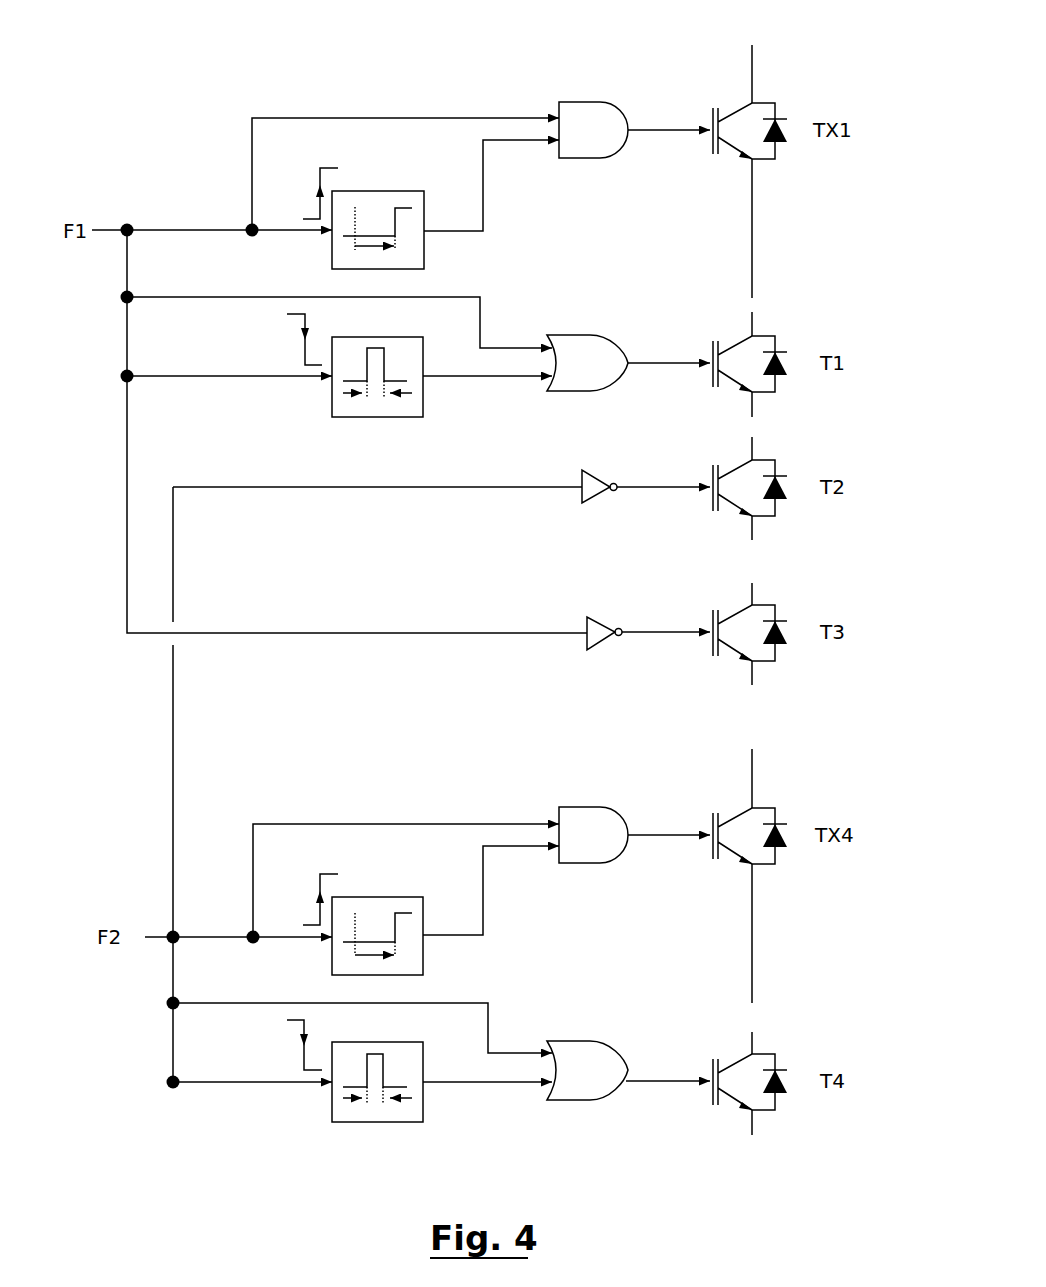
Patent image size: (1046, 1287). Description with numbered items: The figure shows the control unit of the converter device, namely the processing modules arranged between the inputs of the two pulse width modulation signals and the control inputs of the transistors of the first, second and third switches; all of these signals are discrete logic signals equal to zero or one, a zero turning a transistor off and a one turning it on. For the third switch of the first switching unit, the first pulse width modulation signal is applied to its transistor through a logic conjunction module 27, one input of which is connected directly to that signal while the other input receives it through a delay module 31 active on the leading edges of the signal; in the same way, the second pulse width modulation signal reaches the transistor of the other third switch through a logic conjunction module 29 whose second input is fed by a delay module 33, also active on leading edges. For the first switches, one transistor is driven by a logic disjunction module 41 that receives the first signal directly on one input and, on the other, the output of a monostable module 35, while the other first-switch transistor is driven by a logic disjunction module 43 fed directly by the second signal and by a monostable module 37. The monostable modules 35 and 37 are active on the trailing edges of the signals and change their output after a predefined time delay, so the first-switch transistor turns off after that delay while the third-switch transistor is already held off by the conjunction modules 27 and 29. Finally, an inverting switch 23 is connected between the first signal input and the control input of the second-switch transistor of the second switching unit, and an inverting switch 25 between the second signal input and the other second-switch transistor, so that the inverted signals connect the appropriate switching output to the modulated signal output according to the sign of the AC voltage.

The logic conjunction module 27 is at (583, 102).
The logic conjunction module 29 is at (583, 806).
The logic disjunction module 41 is at (593, 335).
The logic disjunction module 43 is at (613, 1041).
The delay module 31 is at (424, 247).
The delay module 33 is at (424, 952).
The monostable module 35 is at (332, 405).
The monostable module 37 is at (332, 1110).
The inverting switch 25 is at (582, 483).
The inverting switch 23 is at (587, 628).